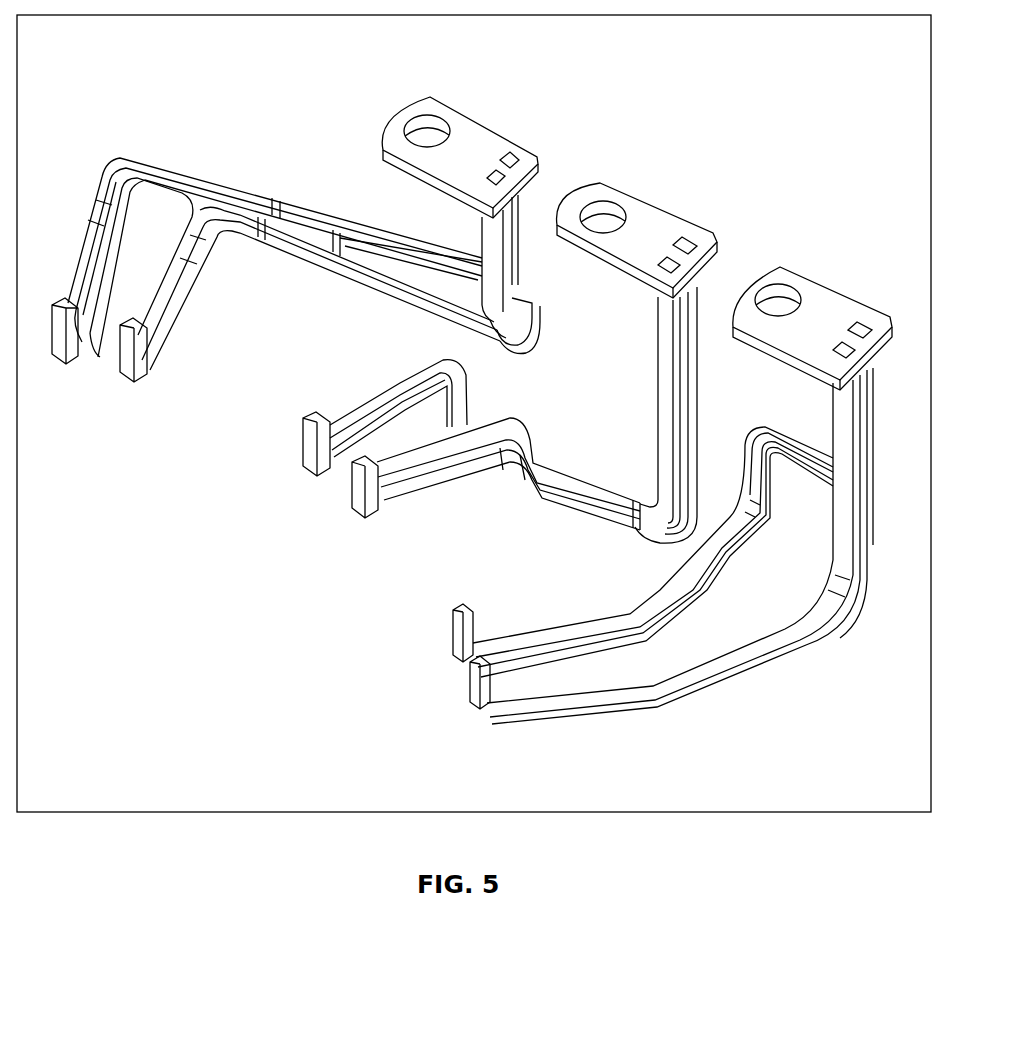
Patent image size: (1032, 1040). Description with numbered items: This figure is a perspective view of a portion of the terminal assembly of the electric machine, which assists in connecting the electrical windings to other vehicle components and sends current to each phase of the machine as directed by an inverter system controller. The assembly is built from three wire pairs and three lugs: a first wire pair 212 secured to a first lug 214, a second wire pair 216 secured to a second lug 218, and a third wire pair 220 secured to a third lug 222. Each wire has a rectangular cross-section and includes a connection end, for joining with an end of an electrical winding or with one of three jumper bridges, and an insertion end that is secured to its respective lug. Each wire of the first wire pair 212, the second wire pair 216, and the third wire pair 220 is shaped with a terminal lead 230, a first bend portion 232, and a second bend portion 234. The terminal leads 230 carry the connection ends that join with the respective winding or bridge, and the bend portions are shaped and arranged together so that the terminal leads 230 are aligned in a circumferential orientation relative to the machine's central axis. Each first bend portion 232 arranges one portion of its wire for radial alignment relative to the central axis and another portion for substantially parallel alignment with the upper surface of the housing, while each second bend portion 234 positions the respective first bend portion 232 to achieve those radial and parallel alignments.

The first wire pair 212 is at (95, 272).
The first lug 214 is at (425, 105).
The second wire pair 216 is at (415, 482).
The second lug 218 is at (603, 193).
The third wire pair 220 is at (552, 645).
The third lug 222 is at (777, 283).
The terminal lead 230 is at (118, 370).
The first bend portion 232 is at (104, 170).
The second bend portion 234 is at (465, 248).